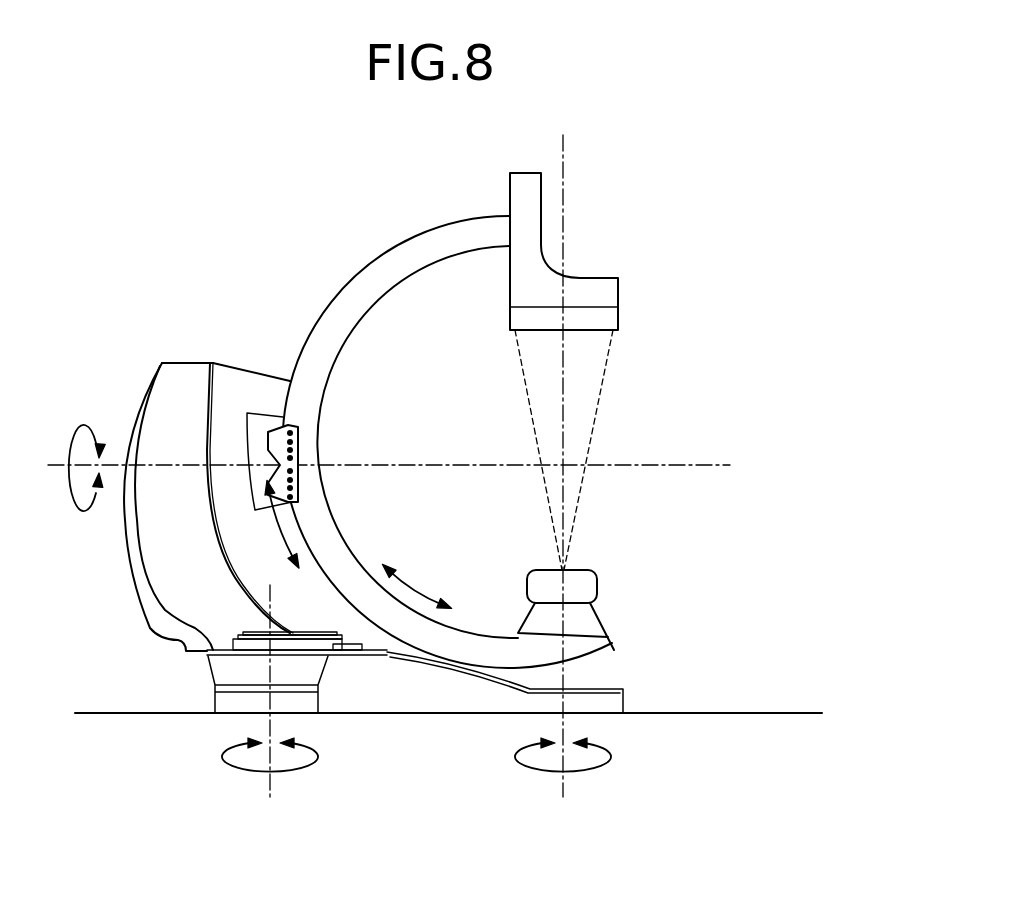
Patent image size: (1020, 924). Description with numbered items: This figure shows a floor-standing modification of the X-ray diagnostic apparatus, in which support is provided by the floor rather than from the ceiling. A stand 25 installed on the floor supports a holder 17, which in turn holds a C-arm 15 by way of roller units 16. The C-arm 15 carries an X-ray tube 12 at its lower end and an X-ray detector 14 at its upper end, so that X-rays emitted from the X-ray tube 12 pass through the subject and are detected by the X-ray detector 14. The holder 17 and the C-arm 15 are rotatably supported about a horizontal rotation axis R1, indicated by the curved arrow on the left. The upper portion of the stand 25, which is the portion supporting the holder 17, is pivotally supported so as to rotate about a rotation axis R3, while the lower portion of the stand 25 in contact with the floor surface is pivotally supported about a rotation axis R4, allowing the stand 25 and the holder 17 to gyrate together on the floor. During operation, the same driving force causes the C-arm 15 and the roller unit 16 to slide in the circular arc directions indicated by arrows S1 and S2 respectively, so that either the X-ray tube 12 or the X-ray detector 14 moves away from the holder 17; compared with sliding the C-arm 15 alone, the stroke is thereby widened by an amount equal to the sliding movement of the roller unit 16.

The X-ray tube 12 is at (598, 585).
The X-ray detector 14 is at (618, 317).
The C-arm 15 is at (323, 400).
The roller units 16 is at (242, 408).
The holder 17 is at (240, 362).
The stand 25 is at (180, 362).
The rotation axis R1 is at (83, 425).
The rotation axis R3 is at (318, 757).
The rotation axis R4 is at (611, 757).
The arrow indicating sliding movement direction of the C-arm S1 is at (422, 595).
The arrow indicating sliding movement direction of the roller unit S2 is at (228, 552).